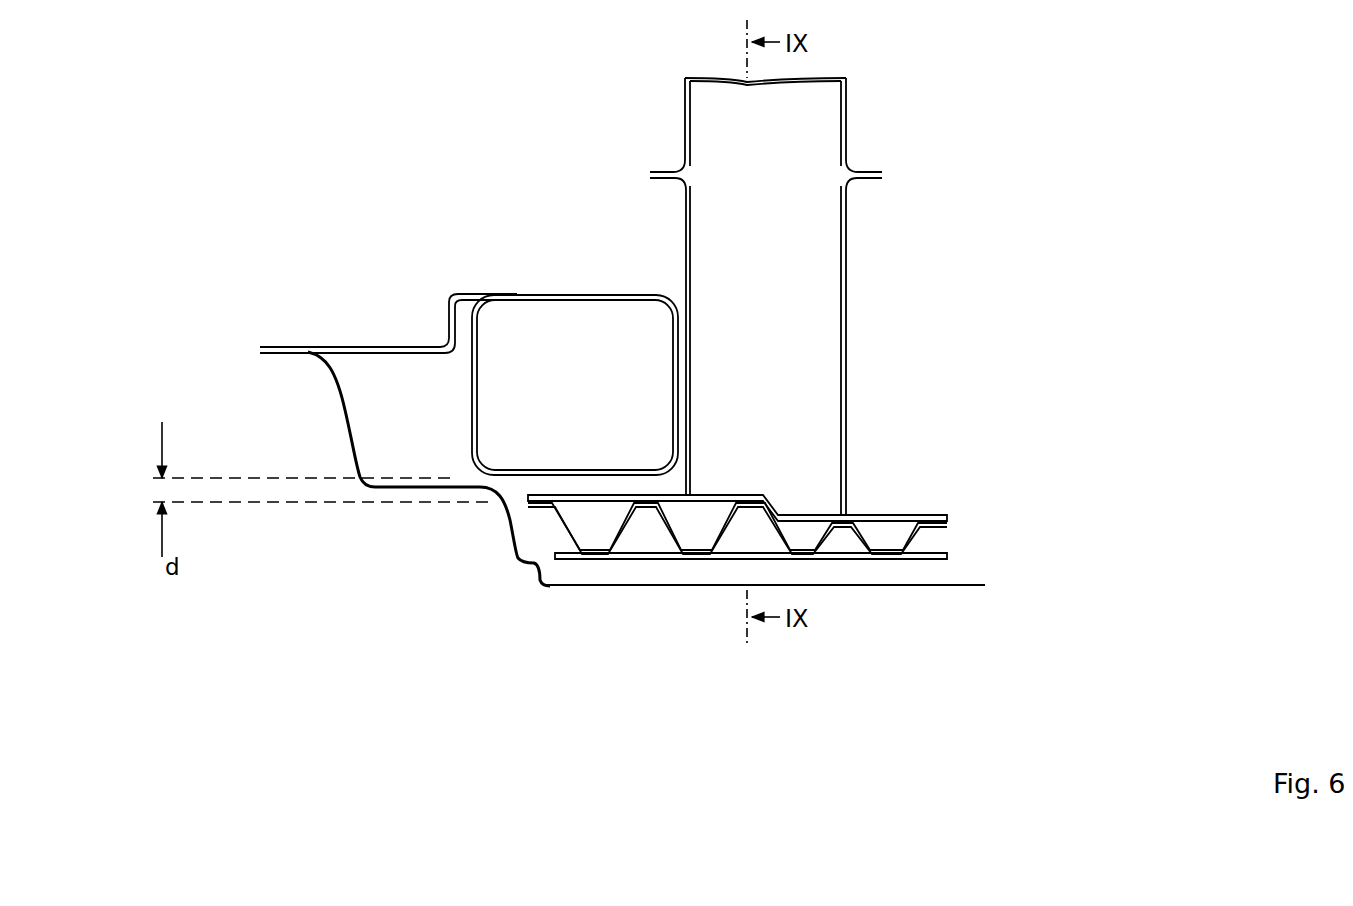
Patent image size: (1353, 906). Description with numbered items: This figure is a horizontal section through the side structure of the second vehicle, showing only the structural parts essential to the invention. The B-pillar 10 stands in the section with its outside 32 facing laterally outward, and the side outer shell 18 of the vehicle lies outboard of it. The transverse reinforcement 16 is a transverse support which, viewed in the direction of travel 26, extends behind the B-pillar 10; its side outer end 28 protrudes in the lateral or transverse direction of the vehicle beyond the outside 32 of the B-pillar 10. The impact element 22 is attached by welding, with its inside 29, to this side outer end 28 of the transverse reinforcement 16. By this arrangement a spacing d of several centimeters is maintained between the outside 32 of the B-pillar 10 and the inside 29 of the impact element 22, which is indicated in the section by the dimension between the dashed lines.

The B-pillar 10 is at (467, 369).
The transverse reinforcement 16 is at (818, 228).
The side outer shell 18 is at (560, 586).
The impact element 22 is at (963, 535).
The direction of travel 26 is at (347, 255).
The side outer end 28 is at (867, 473).
The inside 29 is at (893, 508).
The outside 32 is at (528, 473).